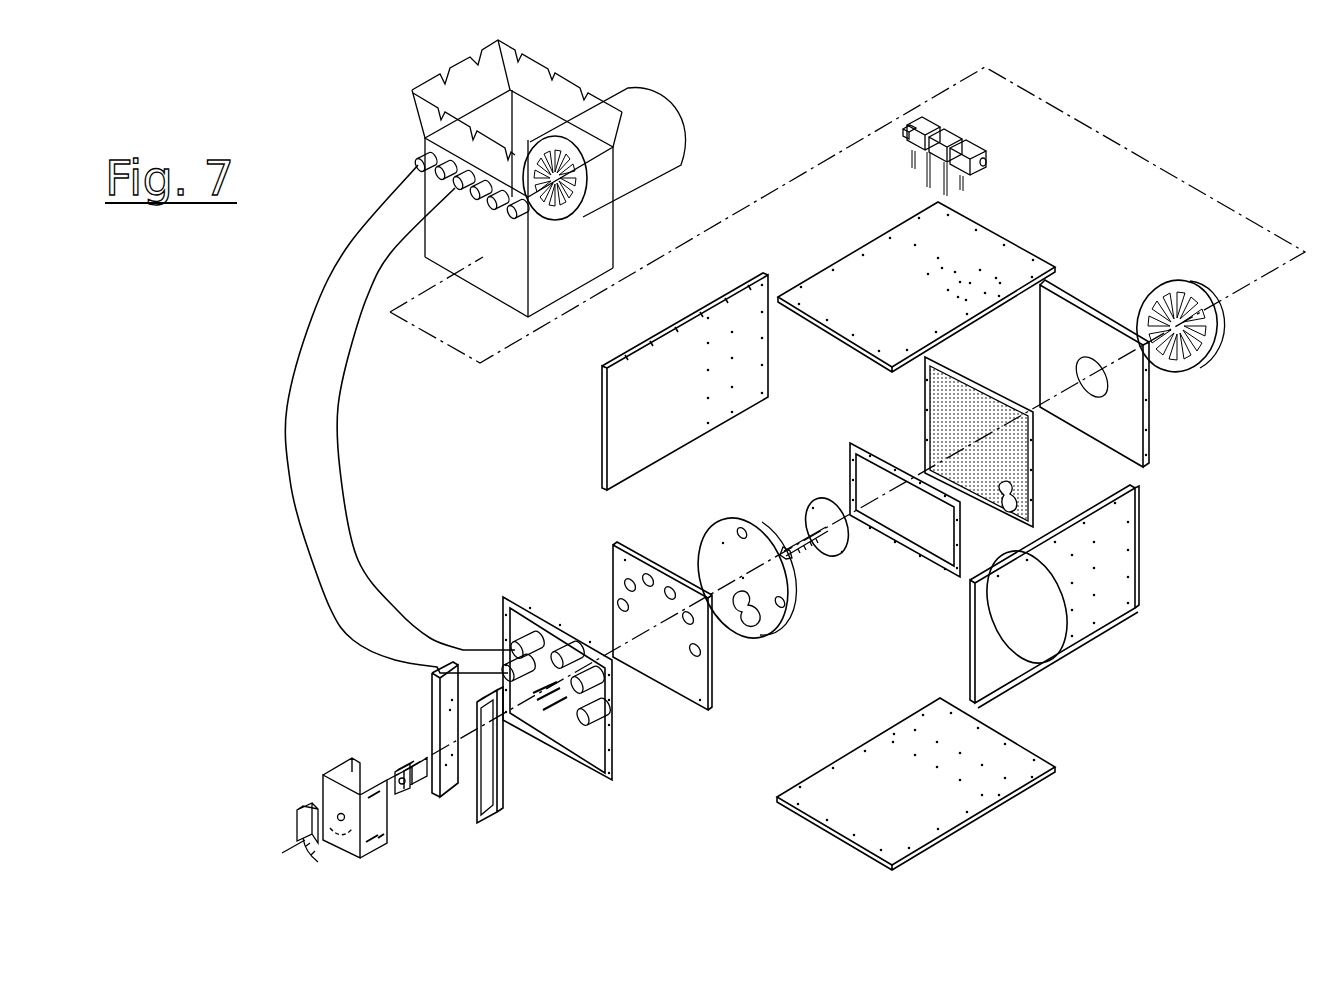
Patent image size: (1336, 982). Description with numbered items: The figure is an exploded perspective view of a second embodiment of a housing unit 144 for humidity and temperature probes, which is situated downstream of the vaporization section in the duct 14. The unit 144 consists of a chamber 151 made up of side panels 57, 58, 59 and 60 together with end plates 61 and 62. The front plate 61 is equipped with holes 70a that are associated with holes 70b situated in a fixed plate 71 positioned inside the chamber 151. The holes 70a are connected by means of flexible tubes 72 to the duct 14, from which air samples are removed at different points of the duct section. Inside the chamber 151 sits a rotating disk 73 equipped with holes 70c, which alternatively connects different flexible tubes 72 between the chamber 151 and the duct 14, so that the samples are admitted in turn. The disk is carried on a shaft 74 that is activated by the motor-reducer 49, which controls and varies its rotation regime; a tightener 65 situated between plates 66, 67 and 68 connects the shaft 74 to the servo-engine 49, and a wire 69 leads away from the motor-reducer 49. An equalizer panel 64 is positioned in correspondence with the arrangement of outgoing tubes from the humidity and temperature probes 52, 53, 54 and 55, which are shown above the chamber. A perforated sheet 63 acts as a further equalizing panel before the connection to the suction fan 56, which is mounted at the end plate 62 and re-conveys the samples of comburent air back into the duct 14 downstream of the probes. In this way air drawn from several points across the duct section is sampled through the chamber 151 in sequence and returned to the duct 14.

The duct 14 is at (600, 222).
The housing unit 144 is at (663, 84).
The flexible tubes 72 is at (283, 315).
The humidity and temperature probe 52 is at (930, 128).
The humidity and temperature probe 53 is at (951, 138).
The humidity and temperature probe 54 is at (982, 150).
The humidity and temperature probe 55 is at (905, 133).
The side panel 58 is at (907, 318).
The side panel 59 is at (676, 412).
The end plate 62 is at (1133, 430).
The suction fan 56 is at (1203, 363).
The perforated sheet 63 is at (1035, 488).
The equalizer panel 64 is at (940, 528).
The side panel 60 is at (1043, 623).
The side panel 57 is at (914, 813).
The front plate 61 is at (575, 743).
The holes 70a is at (578, 680).
The holes 70b is at (670, 587).
The holes 70c is at (740, 527).
The fixed plate 71 is at (672, 678).
The rotating disk 73 is at (753, 548).
The shaft 74 is at (833, 555).
The plate 67 is at (430, 722).
The tightener 65 is at (408, 768).
The plate 66 is at (500, 772).
The plate 68 is at (323, 785).
The motor-reducer 49 is at (298, 824).
The wire 69 is at (318, 862).
The chamber 151 is at (692, 813).